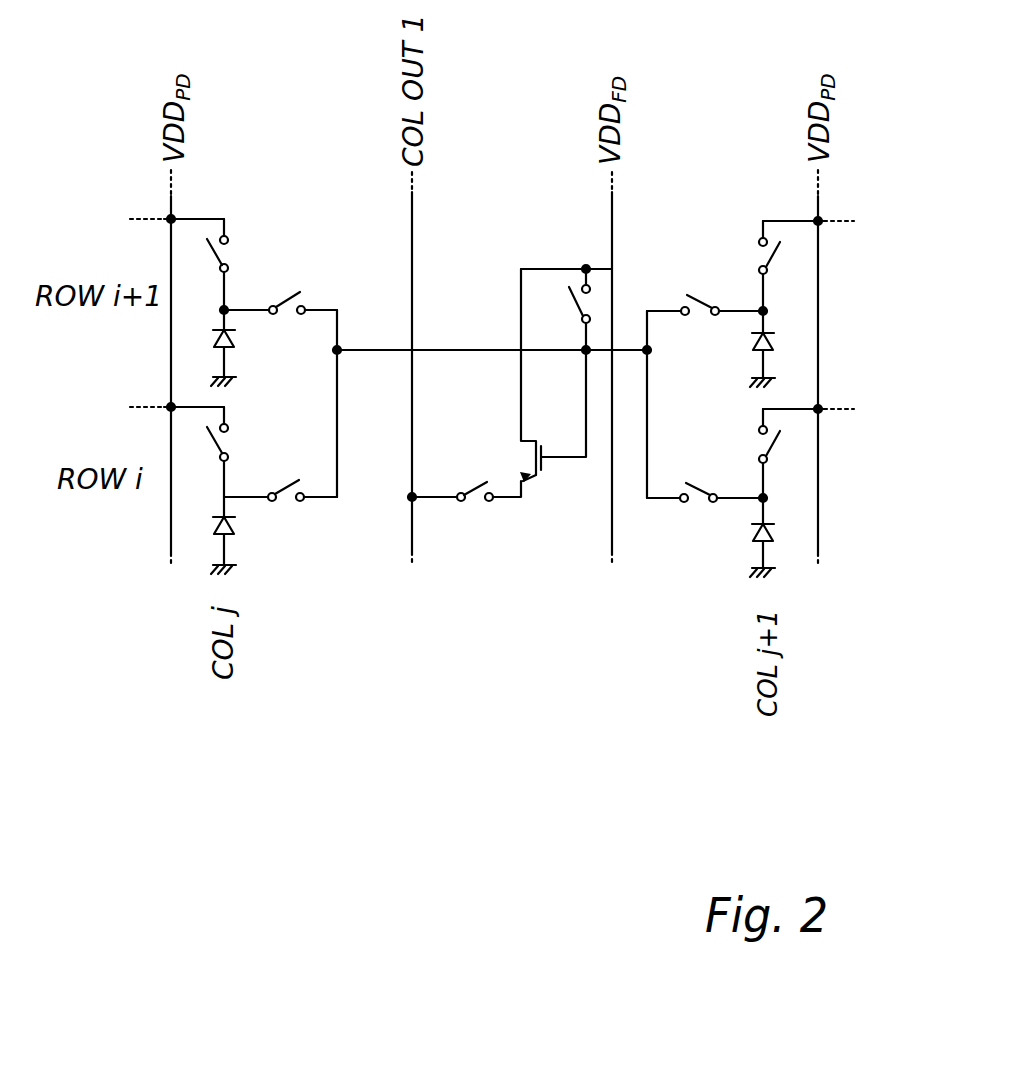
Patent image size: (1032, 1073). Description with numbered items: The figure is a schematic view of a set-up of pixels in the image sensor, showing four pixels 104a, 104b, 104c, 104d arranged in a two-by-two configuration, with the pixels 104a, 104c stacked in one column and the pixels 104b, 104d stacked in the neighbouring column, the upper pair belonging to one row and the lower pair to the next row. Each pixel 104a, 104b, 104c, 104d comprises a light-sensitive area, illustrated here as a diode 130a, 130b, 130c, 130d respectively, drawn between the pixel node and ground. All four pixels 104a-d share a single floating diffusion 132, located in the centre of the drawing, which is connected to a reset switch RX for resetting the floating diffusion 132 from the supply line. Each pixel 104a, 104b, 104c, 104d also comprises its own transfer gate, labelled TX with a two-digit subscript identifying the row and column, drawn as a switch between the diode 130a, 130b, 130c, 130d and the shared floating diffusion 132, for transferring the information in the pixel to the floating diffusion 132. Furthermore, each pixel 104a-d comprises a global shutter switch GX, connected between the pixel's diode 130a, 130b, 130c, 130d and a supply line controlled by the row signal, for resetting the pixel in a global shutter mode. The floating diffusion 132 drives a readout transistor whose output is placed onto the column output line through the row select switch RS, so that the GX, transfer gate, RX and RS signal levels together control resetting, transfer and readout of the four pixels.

The pixel 104a is at (134, 601).
The pixel 104b is at (674, 569).
The pixel 104c is at (318, 176).
The pixel 104d is at (703, 174).
The diode 130a is at (233, 523).
The diode 130b is at (778, 530).
The diode 130c is at (205, 338).
The diode 130d is at (773, 340).
The floating diffusion 132 is at (532, 482).